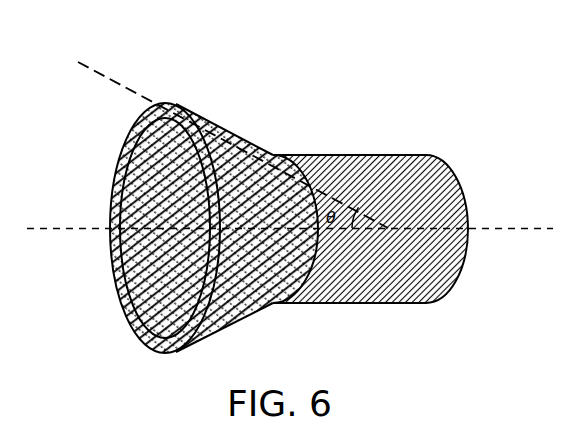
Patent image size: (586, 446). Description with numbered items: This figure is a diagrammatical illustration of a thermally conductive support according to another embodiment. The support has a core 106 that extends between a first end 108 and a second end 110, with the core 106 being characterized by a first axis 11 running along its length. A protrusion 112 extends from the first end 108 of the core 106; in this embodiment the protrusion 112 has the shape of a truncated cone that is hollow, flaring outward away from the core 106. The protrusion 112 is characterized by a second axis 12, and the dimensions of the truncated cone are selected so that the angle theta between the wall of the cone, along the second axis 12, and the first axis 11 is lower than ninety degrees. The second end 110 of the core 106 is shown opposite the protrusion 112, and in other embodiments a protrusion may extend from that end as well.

The first axis 11 is at (27, 229).
The second axis 12 is at (103, 77).
The core 106 is at (361, 155).
The first end 108 is at (267, 304).
The second end 110 is at (433, 304).
The protrusion 112 is at (223, 330).